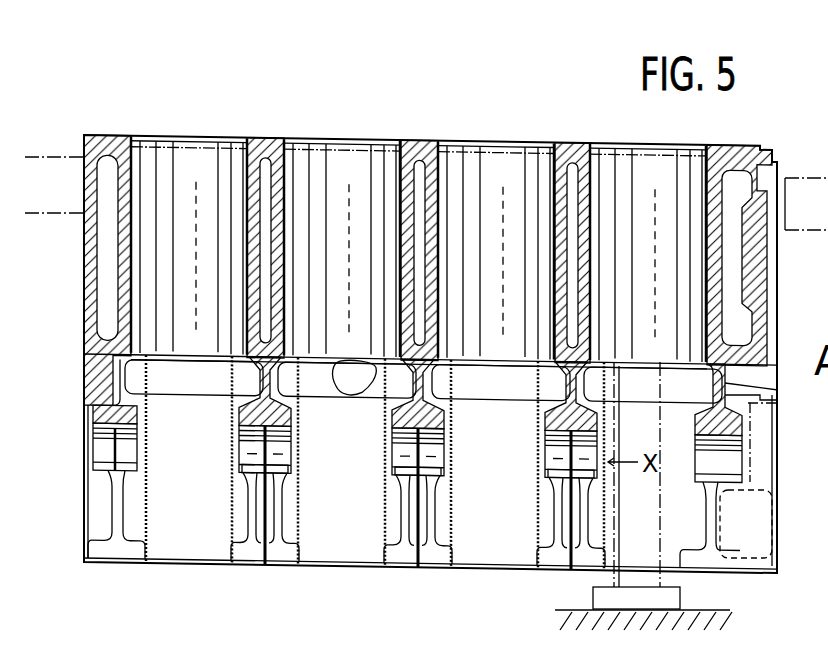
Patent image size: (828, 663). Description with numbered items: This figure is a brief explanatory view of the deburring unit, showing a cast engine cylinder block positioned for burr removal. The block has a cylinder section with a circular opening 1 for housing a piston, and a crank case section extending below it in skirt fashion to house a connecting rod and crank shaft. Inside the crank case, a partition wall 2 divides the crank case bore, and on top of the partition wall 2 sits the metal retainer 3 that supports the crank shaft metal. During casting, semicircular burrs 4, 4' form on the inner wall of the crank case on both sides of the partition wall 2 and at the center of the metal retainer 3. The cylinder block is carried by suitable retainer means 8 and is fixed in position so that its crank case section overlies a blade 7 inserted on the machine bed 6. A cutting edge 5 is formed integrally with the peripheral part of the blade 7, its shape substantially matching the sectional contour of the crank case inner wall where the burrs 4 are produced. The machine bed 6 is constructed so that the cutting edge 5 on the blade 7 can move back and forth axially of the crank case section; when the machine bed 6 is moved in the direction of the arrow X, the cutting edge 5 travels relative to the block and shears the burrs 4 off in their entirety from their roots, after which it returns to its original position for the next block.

The circular opening 1 is at (488, 162).
The partition wall 2 is at (423, 383).
The metal retainer 3 is at (438, 437).
The burrs 4 is at (387, 442).
The burrs 4' is at (414, 540).
The cutting edge 5 is at (632, 370).
The machine bed 6 is at (660, 600).
The blade 7 is at (650, 410).
The retainer means 8 is at (62, 158).